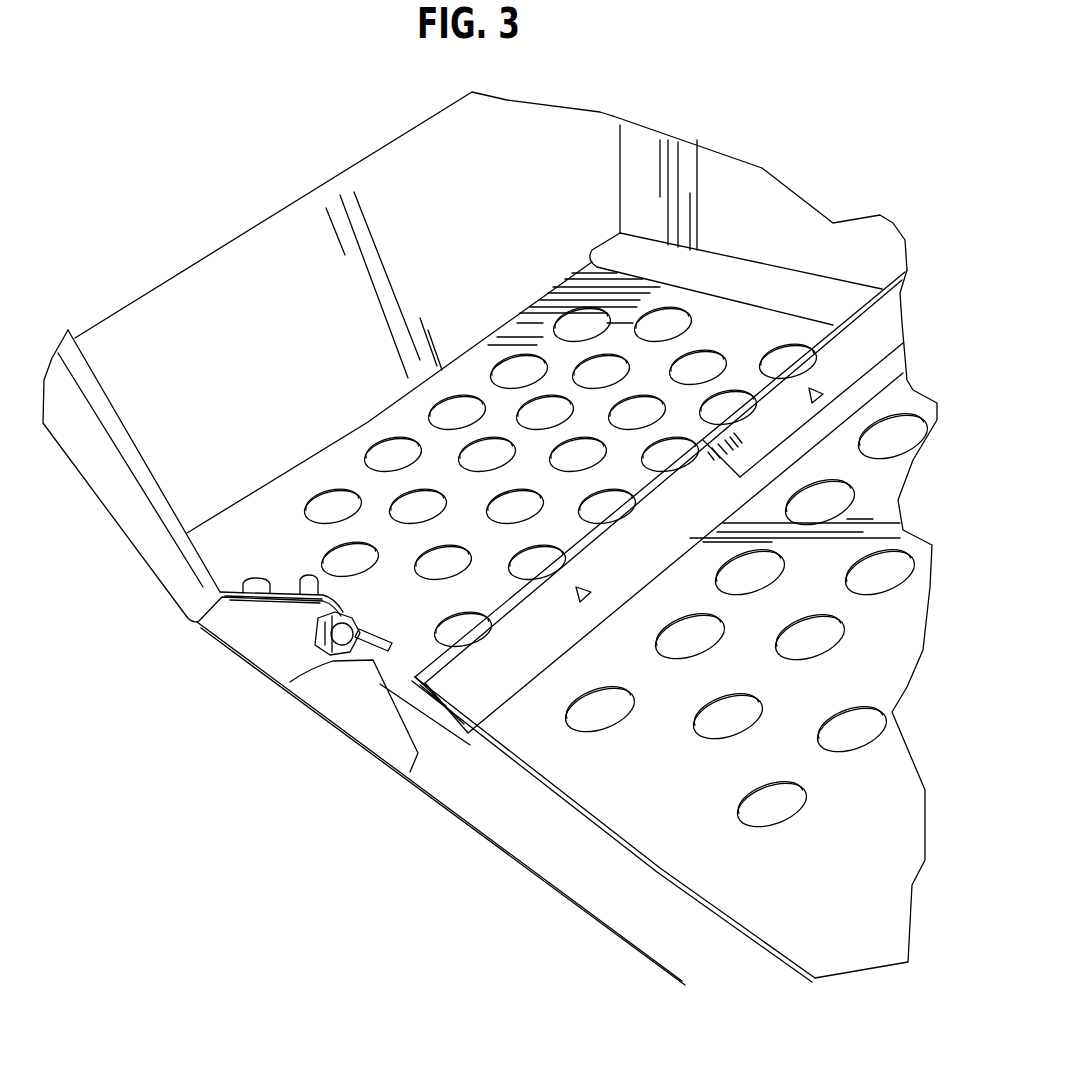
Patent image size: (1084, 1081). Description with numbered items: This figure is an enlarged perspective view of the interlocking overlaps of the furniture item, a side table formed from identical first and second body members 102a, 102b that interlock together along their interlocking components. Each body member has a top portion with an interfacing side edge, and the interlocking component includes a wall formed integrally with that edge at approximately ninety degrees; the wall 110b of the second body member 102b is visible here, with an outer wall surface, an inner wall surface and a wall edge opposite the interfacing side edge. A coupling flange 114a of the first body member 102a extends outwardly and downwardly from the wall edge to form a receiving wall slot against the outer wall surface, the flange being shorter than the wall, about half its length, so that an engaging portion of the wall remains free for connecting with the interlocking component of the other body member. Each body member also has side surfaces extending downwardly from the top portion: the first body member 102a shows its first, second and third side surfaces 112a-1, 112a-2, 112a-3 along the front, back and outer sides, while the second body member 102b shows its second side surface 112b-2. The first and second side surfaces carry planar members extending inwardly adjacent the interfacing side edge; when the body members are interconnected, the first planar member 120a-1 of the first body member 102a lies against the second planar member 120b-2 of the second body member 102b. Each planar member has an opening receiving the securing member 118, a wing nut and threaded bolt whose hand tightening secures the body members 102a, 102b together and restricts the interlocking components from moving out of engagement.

The first body member 102a is at (238, 543).
The second body member 102b is at (664, 824).
The wall of second body member 110b is at (550, 623).
The first side surface of first body member 112a-1 is at (167, 610).
The second side surface of first body member 112a-2 is at (720, 200).
The third side surface of first body member 112a-3 is at (417, 153).
The second side surface of second body member 112b-2 is at (540, 883).
The coupling flange of first body member 114a is at (777, 428).
The securing member 118 is at (340, 647).
The first planar member of first body member 120a-1 is at (263, 580).
The second planar member of second body member 120b-2 is at (375, 717).